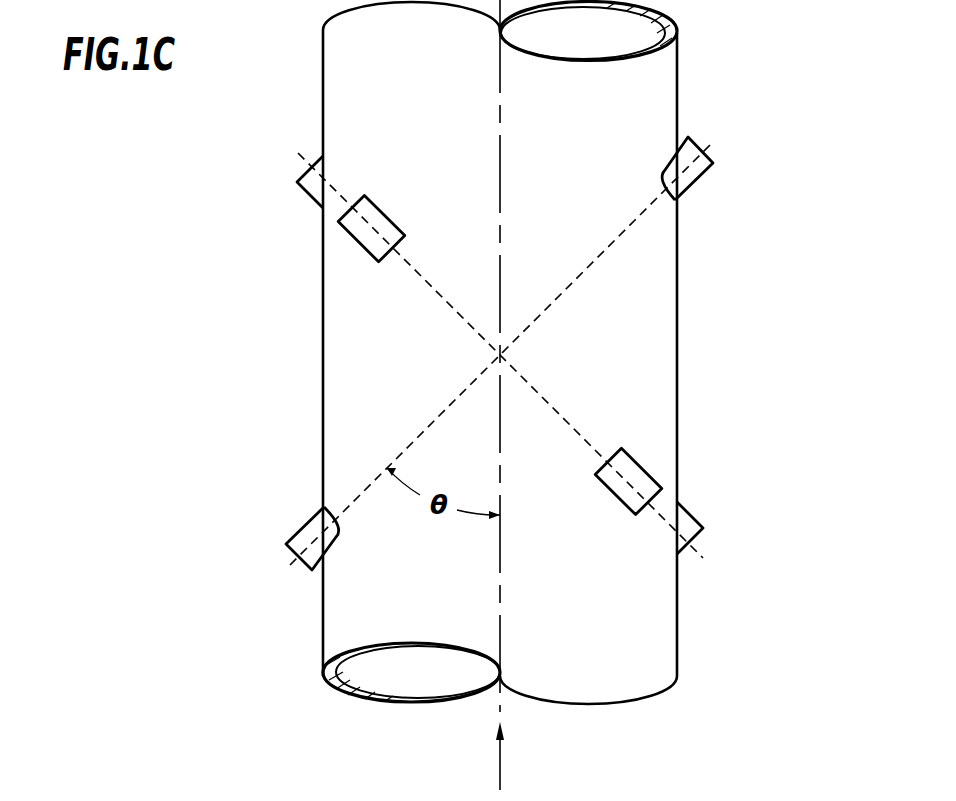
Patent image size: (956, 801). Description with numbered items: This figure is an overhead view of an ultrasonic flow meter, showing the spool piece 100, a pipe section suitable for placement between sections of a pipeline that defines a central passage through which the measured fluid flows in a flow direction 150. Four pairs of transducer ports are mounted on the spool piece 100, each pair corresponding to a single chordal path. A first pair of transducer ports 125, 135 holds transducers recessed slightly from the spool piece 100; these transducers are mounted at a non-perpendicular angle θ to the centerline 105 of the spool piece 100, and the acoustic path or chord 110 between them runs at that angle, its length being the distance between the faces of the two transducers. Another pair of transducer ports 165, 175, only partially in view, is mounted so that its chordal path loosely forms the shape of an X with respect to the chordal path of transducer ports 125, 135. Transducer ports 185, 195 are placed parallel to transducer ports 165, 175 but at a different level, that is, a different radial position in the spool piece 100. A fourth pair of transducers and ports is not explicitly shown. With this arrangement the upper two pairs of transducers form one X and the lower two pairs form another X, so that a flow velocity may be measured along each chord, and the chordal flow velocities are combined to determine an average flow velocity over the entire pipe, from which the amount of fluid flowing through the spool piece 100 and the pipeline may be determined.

The spool piece 100 is at (677, 50).
The centerline 105 is at (500, 105).
The path (chord) 110 is at (553, 302).
The transducer port 125 is at (703, 178).
The transducer port 135 is at (313, 512).
The flow direction 150 is at (500, 766).
The transducer port 165 is at (310, 195).
The transducer port 175 is at (690, 510).
The transducer port 185 is at (377, 197).
The transducer port 195 is at (613, 492).